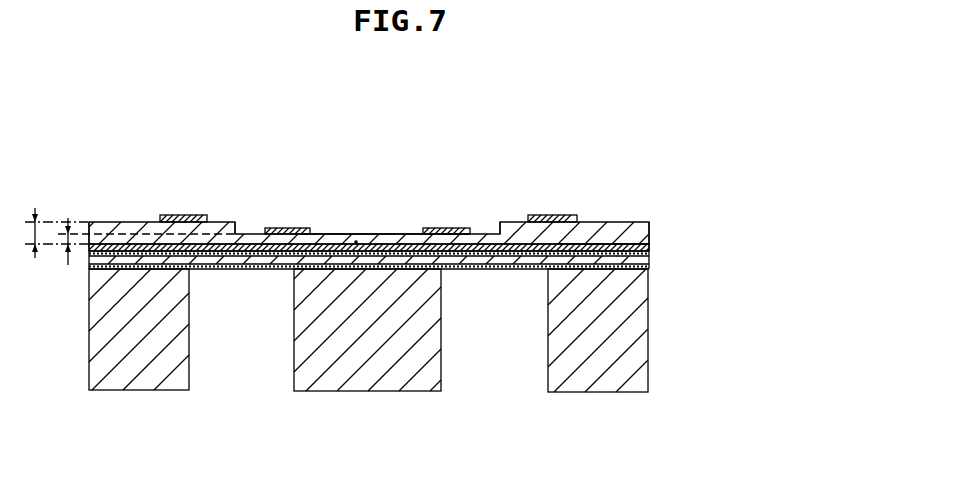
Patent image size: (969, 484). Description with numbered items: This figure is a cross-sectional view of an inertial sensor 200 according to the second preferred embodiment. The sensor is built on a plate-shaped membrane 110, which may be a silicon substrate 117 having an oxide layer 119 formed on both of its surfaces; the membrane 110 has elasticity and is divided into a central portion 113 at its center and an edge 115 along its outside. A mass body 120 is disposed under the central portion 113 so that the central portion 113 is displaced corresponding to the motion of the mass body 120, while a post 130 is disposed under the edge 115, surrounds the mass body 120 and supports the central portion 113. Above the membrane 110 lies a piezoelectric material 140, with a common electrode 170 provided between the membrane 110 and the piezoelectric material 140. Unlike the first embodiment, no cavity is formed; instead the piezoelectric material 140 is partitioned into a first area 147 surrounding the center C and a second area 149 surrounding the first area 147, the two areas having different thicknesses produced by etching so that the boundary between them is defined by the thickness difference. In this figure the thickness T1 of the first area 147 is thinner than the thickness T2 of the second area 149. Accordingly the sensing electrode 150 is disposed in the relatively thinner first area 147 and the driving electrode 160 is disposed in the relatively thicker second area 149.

The inertial sensor 200 is at (141, 124).
The piezoelectric material 140 is at (641, 231).
The common electrode 170 is at (645, 247).
The oxide layer 119 is at (648, 253).
The silicon substrate 117 is at (648, 259).
The membrane 110 is at (443, 274).
The post 130 is at (142, 357).
The mass body 120 is at (372, 357).
The driving electrode 160 is at (182, 215).
The sensing electrode 150 is at (297, 228).
The first area 147 is at (247, 235).
The second area 149 is at (503, 226).
The center C is at (356, 241).
The central portion 113 is at (386, 243).
The edge 115 is at (598, 240).
The thickness of first area T1 is at (71, 254).
The thickness of second area T2 is at (55, 217).